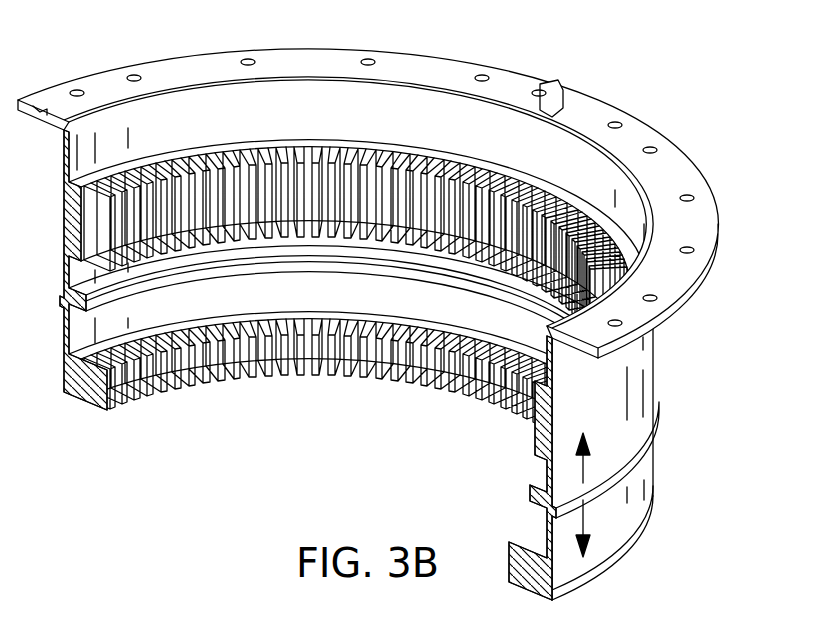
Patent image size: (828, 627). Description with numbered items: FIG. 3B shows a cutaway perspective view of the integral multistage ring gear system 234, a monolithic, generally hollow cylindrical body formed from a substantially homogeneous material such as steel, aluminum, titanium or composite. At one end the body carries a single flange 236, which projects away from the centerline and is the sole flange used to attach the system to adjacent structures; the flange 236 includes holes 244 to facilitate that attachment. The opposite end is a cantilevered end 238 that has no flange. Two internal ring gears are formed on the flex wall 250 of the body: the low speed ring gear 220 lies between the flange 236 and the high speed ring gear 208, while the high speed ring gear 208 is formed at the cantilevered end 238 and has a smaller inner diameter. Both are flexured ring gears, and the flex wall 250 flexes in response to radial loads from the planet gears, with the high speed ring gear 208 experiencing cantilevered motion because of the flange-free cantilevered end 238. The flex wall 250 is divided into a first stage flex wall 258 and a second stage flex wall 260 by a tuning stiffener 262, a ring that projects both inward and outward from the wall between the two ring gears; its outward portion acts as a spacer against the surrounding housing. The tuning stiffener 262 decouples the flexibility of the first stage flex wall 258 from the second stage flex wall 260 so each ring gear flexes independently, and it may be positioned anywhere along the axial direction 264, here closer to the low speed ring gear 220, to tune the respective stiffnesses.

The integral multistage ring gear system 234 is at (372, 318).
The holes 244 is at (75, 88).
The low speed ring gear 220 is at (213, 170).
The flange 236 is at (675, 165).
The flex wall 250 is at (655, 337).
The second stage flex wall 260 is at (640, 362).
The tuning stiffener 262 is at (655, 412).
The first stage flex wall 258 is at (642, 470).
The axial direction 264 is at (586, 520).
The cantilevered end 238 is at (557, 583).
The high speed ring gear 208 is at (290, 380).